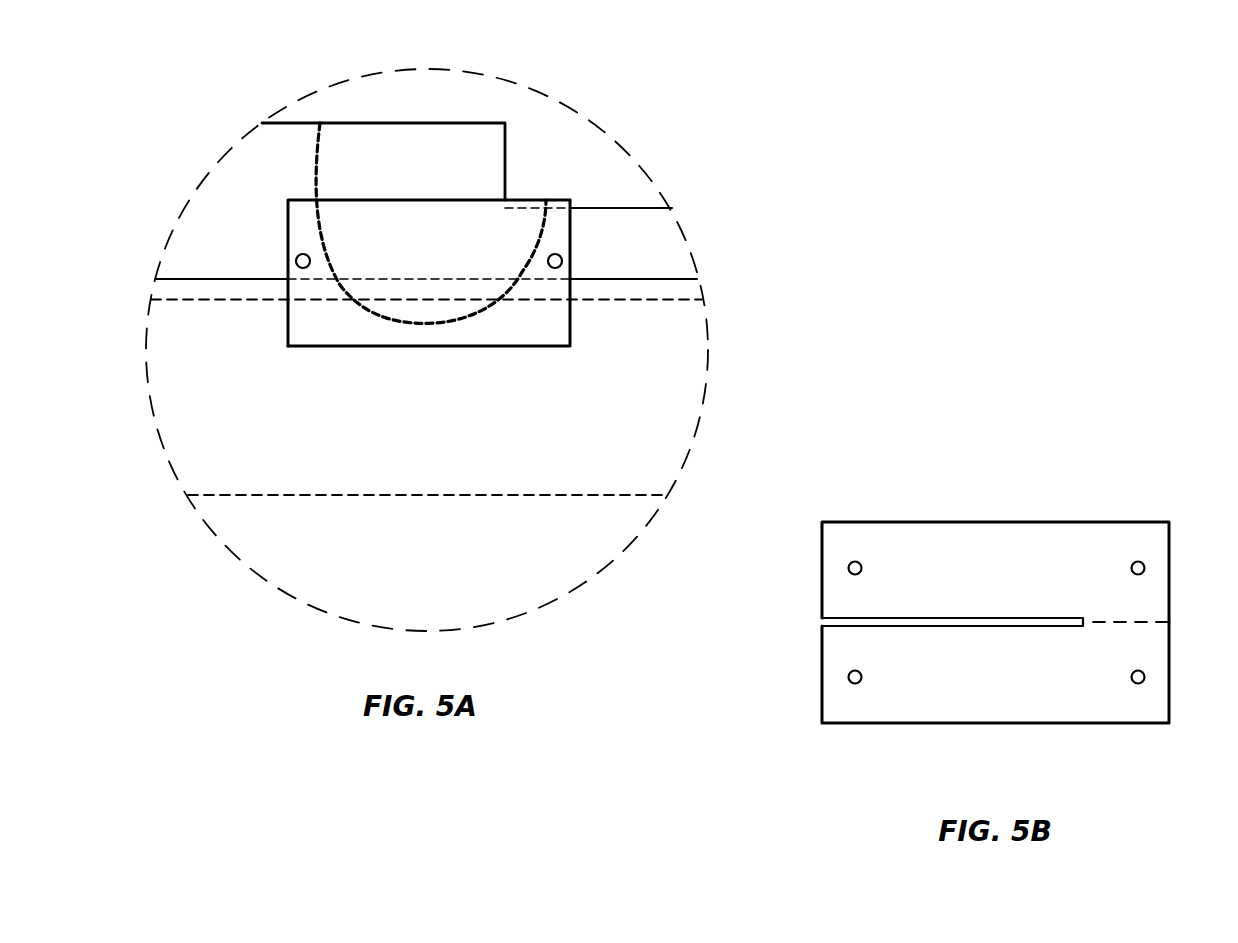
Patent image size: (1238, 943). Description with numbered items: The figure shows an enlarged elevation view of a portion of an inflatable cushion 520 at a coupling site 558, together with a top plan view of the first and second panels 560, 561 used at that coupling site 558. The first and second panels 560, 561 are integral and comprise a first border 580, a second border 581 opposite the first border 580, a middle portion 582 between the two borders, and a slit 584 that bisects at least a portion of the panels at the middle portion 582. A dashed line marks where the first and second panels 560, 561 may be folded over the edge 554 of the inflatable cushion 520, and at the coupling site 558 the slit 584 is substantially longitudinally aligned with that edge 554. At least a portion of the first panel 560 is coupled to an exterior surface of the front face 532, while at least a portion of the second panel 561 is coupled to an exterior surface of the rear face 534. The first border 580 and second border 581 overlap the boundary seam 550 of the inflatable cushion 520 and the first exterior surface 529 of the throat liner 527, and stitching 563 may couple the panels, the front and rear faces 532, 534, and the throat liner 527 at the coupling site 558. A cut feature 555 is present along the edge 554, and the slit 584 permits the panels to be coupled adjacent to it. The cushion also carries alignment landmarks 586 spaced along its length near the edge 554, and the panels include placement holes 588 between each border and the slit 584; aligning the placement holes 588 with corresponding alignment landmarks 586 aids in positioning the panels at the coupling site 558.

In FIG. 5A, the inflatable cushion 520 is at (492, 572).
In FIG. 5A, the throat liner 527 is at (643, 468).
In FIG. 5A, the first exterior surface 529 is at (633, 302).
In FIG. 5A, the front face 532 is at (655, 230).
In FIG. 5A, the rear face 534 is at (666, 255).
In FIG. 5A, the boundary seam 550 is at (205, 279).
In FIG. 5A, the edge 554 is at (605, 208).
In FIG. 5A, the cut feature 555 is at (450, 138).
In FIG. 5A, the coupling site 558 is at (538, 185).
In FIG. 5A, the first panel 560 is at (313, 324).
In FIG. 5B, the first panel 560 is at (830, 675).
In FIG. 5A, the second panel 561 is at (360, 325).
In FIG. 5B, the second panel 561 is at (830, 575).
In FIG. 5A, the stitching 563 is at (297, 240).
In FIG. 5A, the first border 580 is at (490, 348).
In FIG. 5B, the first border 580 is at (1017, 723).
In FIG. 5A, the second border 581 is at (392, 347).
In FIG. 5B, the second border 581 is at (1013, 521).
In FIG. 5B, the middle portion 582 is at (1155, 593).
In FIG. 5A, the slit 584 is at (373, 196).
In FIG. 5B, the slit 584 is at (987, 621).
In FIG. 5A, the alignment landmarks 586 is at (295, 263).
In FIG. 5B, the placement holes 588 is at (855, 561).